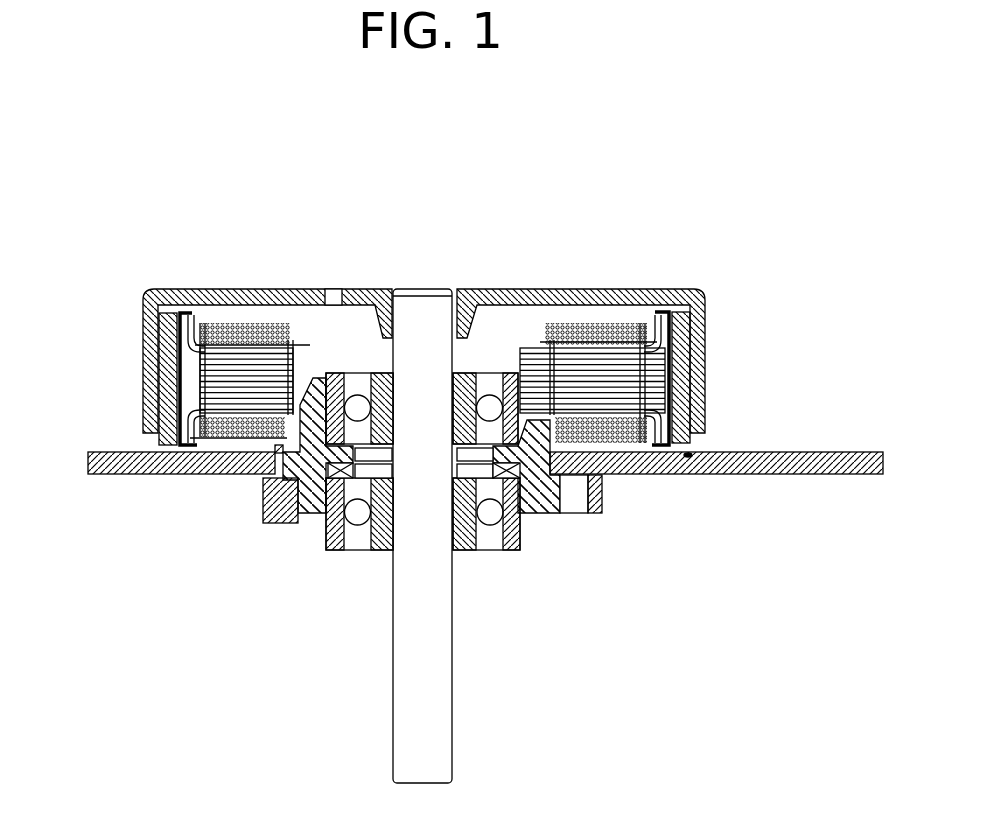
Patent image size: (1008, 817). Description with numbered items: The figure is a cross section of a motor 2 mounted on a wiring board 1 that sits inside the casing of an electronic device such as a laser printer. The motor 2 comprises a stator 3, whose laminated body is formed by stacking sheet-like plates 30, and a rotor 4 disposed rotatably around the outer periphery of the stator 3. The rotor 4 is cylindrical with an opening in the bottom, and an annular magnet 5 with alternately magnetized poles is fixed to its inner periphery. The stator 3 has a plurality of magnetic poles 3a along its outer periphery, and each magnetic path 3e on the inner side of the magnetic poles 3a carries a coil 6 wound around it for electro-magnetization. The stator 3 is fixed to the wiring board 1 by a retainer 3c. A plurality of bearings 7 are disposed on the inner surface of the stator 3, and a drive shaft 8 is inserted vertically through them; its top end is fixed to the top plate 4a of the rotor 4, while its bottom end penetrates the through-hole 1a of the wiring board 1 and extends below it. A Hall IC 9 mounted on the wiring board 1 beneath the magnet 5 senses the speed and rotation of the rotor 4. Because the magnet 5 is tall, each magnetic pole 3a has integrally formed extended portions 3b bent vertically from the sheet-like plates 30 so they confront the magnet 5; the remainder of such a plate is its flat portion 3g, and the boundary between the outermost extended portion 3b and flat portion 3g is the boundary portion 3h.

The wiring board 1 is at (865, 447).
The through-hole 1a is at (268, 528).
The motor 2 is at (461, 299).
The stator 3 is at (445, 366).
The magnetic pole 3a is at (143, 365).
The extended portion 3b is at (158, 290).
The retainer 3c is at (535, 500).
The magnetic path 3e is at (610, 385).
The flat portion 3g is at (240, 323).
The boundary portion 3h is at (143, 333).
The rotor 4 is at (705, 368).
The top plate 4a is at (547, 287).
The magnet 5 is at (705, 318).
The coil 6 is at (593, 320).
The bearing 7 is at (357, 395).
The drive shaft 8 is at (415, 320).
The Hall IC 9 is at (688, 458).
The sheet-like plate 30 is at (273, 390).